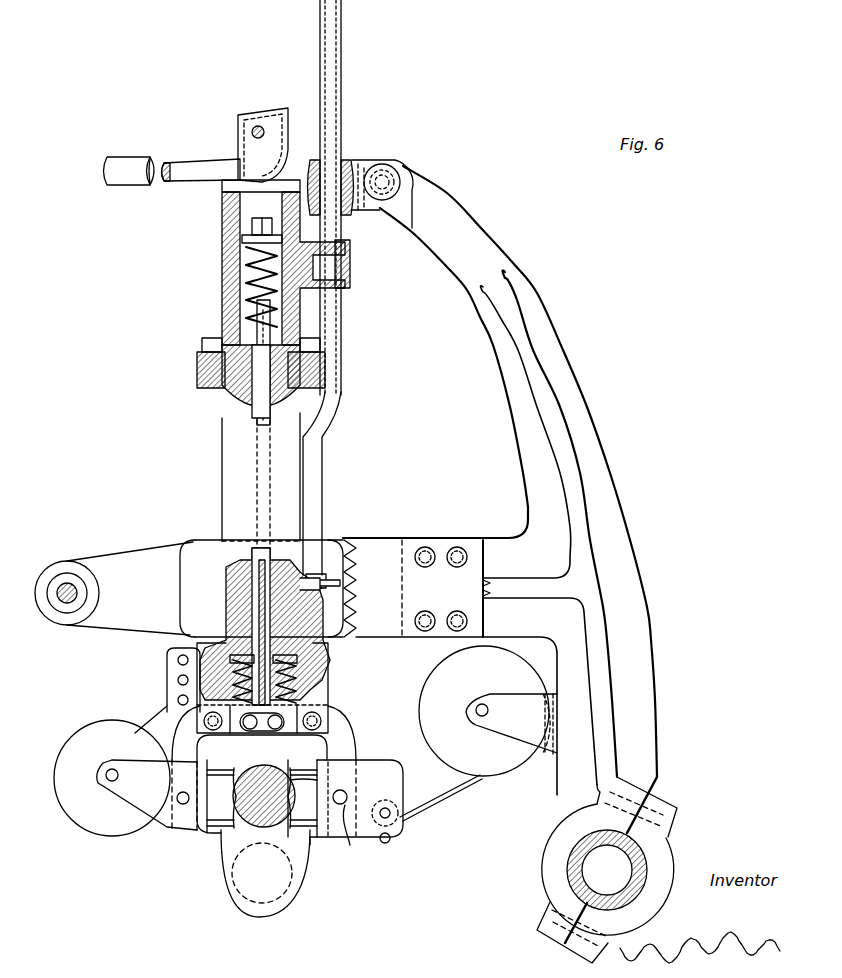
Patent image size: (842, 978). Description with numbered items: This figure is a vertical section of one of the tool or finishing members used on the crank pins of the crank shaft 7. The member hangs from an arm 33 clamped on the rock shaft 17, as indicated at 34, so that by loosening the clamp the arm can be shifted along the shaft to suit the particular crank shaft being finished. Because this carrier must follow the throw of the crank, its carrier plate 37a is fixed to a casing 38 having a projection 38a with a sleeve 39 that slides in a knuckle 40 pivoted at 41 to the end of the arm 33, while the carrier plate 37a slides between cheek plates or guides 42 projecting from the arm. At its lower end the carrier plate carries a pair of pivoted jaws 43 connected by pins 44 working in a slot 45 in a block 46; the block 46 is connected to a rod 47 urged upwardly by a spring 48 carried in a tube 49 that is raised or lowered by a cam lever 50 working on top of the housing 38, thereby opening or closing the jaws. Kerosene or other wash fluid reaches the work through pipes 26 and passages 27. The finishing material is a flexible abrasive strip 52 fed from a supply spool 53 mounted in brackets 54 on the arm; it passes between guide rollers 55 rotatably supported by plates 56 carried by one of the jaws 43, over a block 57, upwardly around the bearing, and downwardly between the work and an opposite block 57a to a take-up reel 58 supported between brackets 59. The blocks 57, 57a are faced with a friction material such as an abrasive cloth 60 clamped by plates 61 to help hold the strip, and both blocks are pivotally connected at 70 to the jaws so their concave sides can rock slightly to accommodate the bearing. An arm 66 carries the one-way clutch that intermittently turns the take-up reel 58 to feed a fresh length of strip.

The crank shaft 7 is at (310, 832).
The rock shaft 17 is at (648, 865).
The pipes 26 is at (327, 108).
The passages 27 is at (246, 620).
The arm 33 is at (582, 510).
The clamp 34 is at (668, 820).
The carrier plate 37a is at (233, 495).
The casing 38 is at (226, 236).
The projection 38a is at (351, 268).
The sleeve 39 is at (342, 72).
The knuckle 40 is at (357, 166).
The pivot 41 is at (386, 182).
The cheek plates 42 is at (332, 557).
The pivoted jaws 43 is at (185, 737).
The pins 44 is at (327, 701).
The slot 45 is at (270, 732).
The block 46 is at (236, 698).
The rod 47 is at (240, 408).
The spring 48 is at (272, 306).
The tube 49 is at (242, 268).
The cam lever 50 is at (190, 168).
The strip 52 is at (262, 768).
The supply spool 53 is at (484, 711).
The brackets 54 is at (511, 724).
The guide rollers 55 is at (405, 823).
The plates 56 is at (393, 783).
The block 57 is at (318, 779).
The opposite block 57a is at (212, 812).
The take-up reel 58 is at (112, 778).
The brackets 59 is at (147, 795).
The abrasive cloth 60 is at (222, 842).
The plates 61 is at (232, 767).
The arm 66 is at (166, 676).
The pivotal connection 70 is at (177, 799).